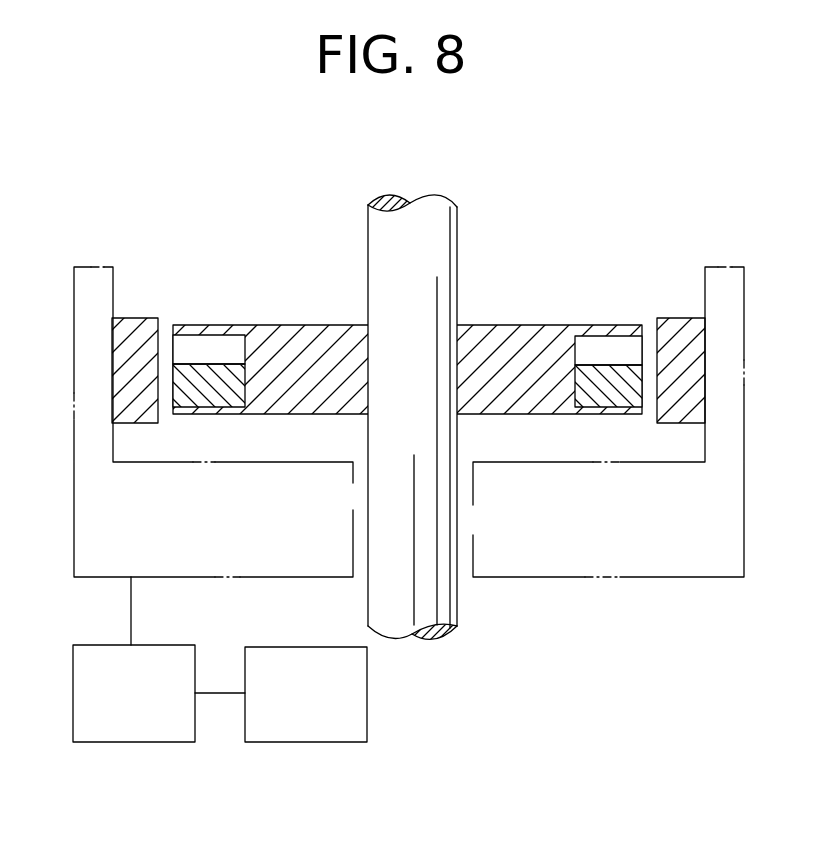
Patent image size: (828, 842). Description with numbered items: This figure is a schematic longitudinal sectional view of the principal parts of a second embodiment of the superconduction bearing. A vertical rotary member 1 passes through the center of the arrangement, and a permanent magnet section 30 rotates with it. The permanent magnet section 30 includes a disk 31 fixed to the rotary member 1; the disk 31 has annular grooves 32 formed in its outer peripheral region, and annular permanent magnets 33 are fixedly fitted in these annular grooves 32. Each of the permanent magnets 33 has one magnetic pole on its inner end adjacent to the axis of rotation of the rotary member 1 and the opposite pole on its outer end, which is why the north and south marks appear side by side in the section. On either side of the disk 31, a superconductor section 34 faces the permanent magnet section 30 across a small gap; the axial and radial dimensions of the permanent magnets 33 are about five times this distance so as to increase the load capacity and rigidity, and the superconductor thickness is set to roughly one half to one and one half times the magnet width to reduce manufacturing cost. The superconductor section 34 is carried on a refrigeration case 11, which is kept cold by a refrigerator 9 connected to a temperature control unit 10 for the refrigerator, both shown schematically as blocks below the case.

The rotary member 1 is at (445, 219).
The refrigerator 9 is at (303, 730).
The temperature control unit 10 is at (141, 730).
The refrigeration case 11 is at (560, 567).
The permanent magnet section 30 is at (500, 340).
The disk 31 is at (325, 347).
The annular grooves 32 is at (212, 343).
The annular permanent magnets 33 is at (205, 393).
The superconductor section 34 is at (145, 332).